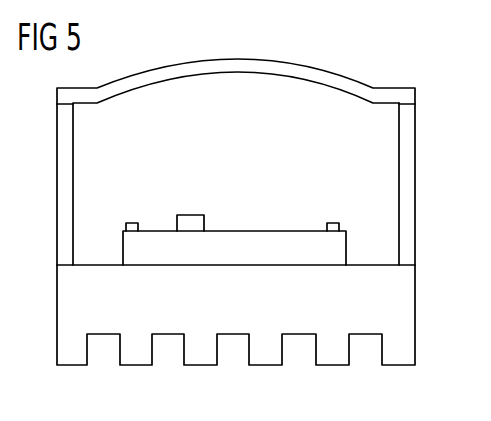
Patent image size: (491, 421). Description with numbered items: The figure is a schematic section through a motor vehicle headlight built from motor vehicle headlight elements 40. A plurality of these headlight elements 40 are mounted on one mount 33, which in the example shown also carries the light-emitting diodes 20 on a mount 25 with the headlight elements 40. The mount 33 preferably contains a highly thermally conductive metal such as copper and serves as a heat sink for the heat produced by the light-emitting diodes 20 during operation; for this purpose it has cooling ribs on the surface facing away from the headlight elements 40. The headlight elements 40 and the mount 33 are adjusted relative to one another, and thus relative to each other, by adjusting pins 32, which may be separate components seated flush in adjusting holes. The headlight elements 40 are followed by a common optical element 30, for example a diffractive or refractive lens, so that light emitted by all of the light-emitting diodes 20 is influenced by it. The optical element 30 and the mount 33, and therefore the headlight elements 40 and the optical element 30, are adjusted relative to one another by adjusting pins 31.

The light-emitting diode 20 is at (187, 221).
The mount 25 is at (342, 250).
The optical element 30 is at (413, 96).
The adjusting pin 31 is at (62, 150).
The adjusting pin 32 is at (133, 223).
The mount 33 is at (407, 307).
The motor vehicle headlight element 40 is at (226, 187).